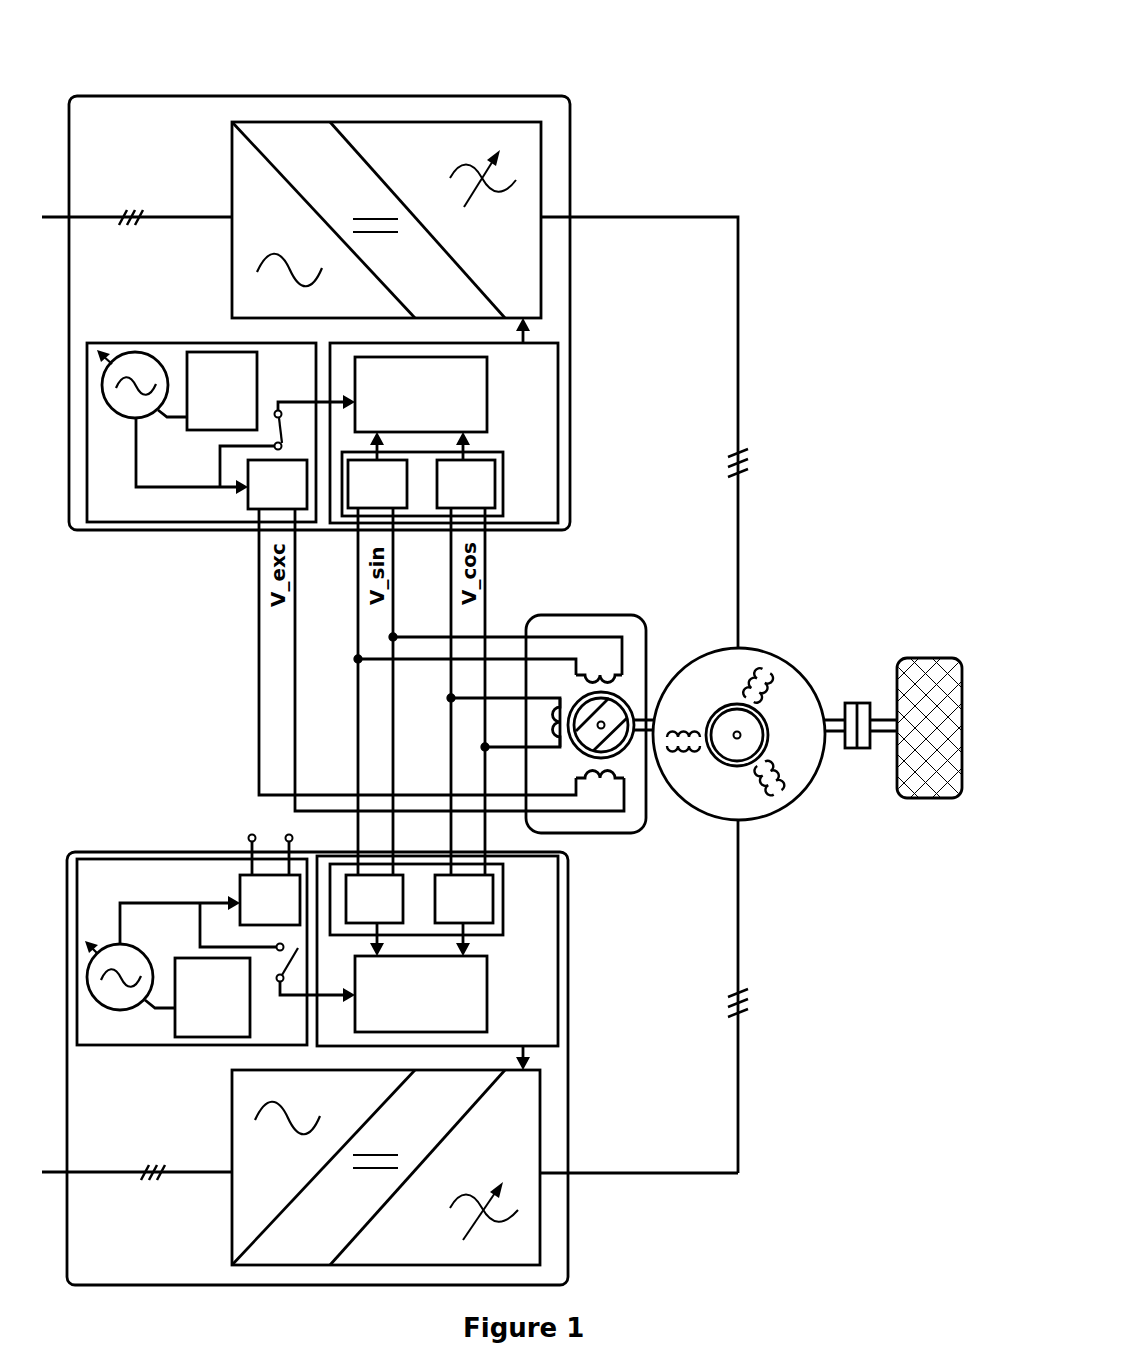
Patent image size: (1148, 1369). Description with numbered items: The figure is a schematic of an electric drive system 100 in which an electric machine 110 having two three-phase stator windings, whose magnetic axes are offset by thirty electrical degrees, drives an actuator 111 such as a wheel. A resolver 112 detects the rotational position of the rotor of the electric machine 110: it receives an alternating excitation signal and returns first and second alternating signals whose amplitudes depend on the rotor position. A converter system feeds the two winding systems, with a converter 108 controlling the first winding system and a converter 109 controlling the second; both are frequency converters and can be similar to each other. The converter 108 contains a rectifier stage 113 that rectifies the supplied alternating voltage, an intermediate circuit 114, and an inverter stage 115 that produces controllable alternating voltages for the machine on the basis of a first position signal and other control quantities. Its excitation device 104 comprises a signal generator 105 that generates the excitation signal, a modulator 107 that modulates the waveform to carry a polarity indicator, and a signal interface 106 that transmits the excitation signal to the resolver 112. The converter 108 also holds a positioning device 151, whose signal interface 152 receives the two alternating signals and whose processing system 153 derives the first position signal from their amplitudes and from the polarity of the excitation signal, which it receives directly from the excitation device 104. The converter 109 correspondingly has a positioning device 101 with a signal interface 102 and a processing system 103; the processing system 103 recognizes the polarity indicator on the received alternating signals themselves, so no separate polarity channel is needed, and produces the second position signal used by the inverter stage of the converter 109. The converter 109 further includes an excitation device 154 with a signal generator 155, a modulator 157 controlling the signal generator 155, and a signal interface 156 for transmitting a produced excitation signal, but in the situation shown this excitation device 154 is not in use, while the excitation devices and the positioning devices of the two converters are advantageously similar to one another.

The electric drive system 100 is at (795, 99).
The positioning device 101 is at (540, 1020).
The signal interface 102 is at (503, 902).
The processing system 103 is at (438, 1023).
The excitation device 104 is at (306, 376).
The signal generator 105 is at (148, 418).
The signal interface 106 is at (295, 491).
The modulator 107 is at (240, 416).
The converter 108 is at (572, 175).
The converter 109 is at (568, 1070).
The electric machine 110 is at (750, 642).
The actuator 111 is at (922, 658).
The resolver 112 is at (590, 615).
The rectifier stage 113 is at (288, 213).
The intermediate circuit 114 is at (351, 183).
The inverter stage 115 is at (425, 161).
The positioning device 151 is at (540, 385).
The signal interface 152 is at (503, 483).
The processing system 153 is at (438, 423).
The excitation device 154 is at (135, 888).
The signal generator 155 is at (148, 955).
The driver amplifier 156 is at (288, 908).
The modulator 157 is at (233, 1023).